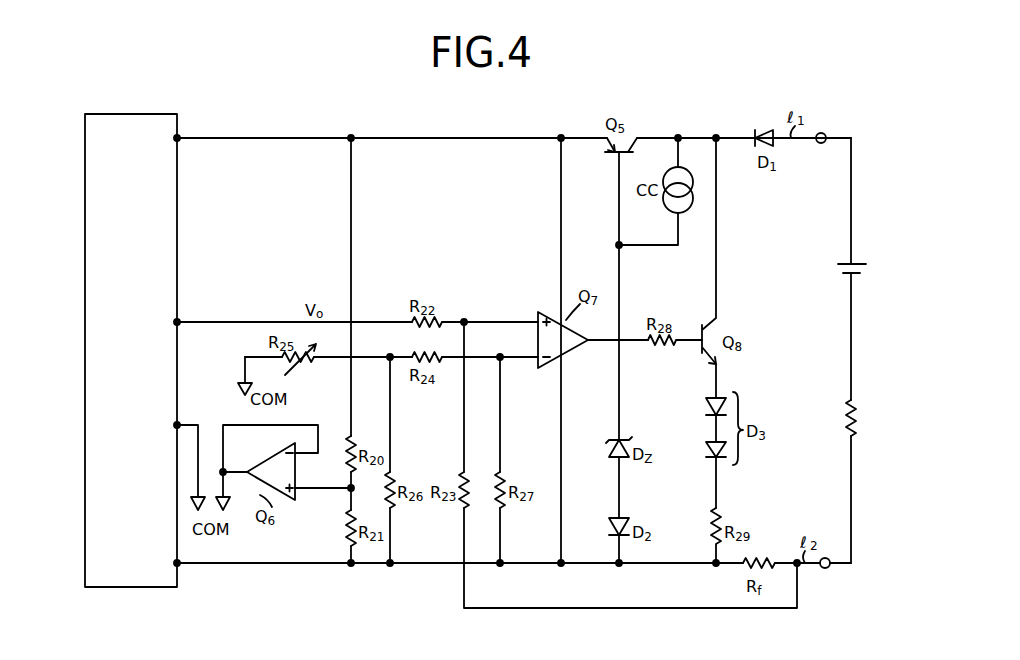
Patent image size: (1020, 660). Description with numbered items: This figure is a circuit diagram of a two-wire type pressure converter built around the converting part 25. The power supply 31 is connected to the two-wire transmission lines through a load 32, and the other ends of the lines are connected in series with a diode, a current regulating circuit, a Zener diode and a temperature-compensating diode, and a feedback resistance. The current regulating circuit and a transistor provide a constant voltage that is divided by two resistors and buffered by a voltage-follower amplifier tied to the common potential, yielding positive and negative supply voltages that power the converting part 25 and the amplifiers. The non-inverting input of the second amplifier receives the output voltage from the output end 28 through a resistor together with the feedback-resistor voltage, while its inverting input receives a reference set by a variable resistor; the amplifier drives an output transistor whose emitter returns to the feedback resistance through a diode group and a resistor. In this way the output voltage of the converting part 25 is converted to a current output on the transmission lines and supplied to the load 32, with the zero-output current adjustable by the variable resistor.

The converting part 25 is at (130, 114).
The output end 28 is at (184, 318).
The power supply 31 is at (838, 276).
The load 32 is at (846, 421).